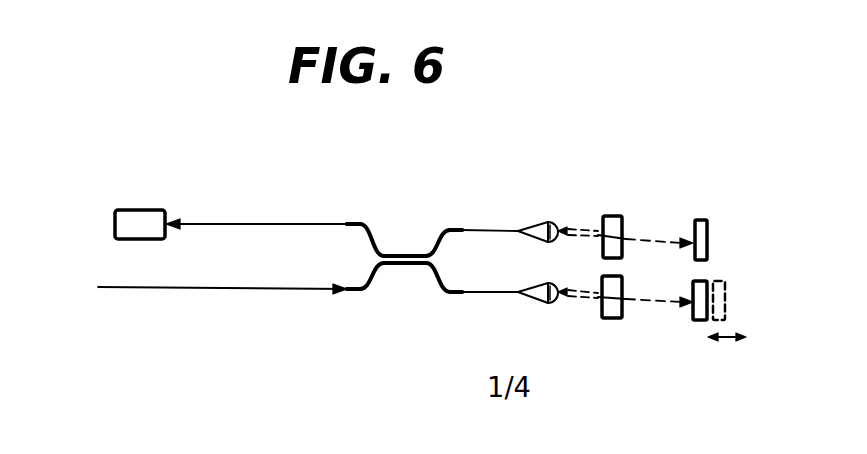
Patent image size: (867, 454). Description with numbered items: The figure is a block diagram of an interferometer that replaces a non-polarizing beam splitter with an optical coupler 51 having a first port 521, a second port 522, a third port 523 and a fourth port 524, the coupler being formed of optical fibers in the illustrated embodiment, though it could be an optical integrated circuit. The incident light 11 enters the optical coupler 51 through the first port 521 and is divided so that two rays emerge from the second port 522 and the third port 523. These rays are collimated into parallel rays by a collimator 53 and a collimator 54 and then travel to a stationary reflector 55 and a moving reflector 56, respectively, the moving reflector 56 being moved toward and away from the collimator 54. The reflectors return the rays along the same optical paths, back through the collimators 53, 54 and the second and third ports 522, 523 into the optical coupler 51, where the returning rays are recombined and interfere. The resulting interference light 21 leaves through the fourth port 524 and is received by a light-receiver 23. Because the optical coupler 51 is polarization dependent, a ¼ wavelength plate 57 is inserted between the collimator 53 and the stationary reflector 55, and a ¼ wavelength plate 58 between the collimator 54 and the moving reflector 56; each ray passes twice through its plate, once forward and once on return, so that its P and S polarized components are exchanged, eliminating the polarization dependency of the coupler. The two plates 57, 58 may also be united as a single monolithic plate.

The incident light 11 is at (107, 287).
The interference light 21 is at (234, 221).
The light-receiver 23 is at (145, 210).
The optical coupler 51 is at (409, 243).
The first port 521 is at (353, 294).
The second port 522 is at (456, 224).
The third port 523 is at (446, 295).
The fourth port 524 is at (355, 222).
The collimator 53 is at (535, 222).
The collimator 54 is at (529, 303).
The stationary reflector 55 is at (699, 218).
The moving reflector 56 is at (697, 321).
The ¼ wavelength plate 57 is at (613, 214).
The ¼ wavelength plate 58 is at (609, 318).